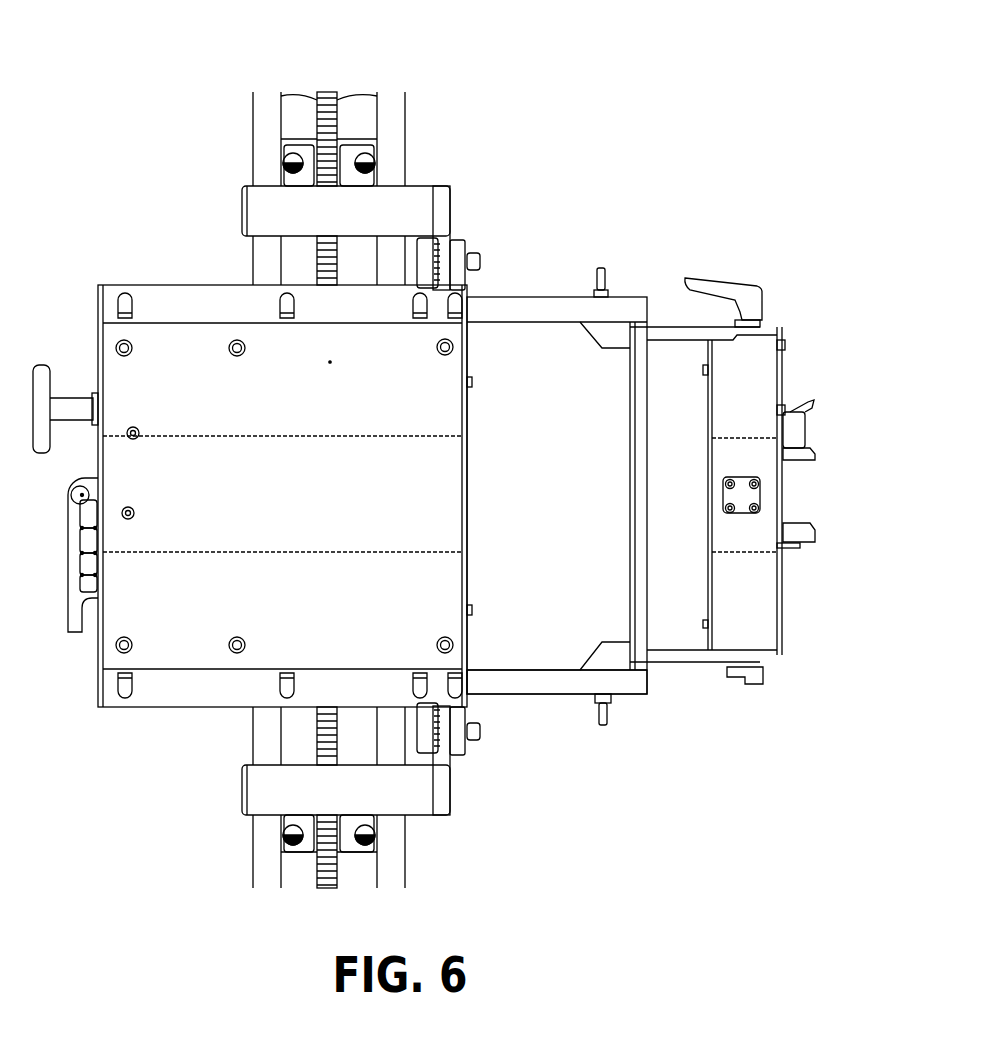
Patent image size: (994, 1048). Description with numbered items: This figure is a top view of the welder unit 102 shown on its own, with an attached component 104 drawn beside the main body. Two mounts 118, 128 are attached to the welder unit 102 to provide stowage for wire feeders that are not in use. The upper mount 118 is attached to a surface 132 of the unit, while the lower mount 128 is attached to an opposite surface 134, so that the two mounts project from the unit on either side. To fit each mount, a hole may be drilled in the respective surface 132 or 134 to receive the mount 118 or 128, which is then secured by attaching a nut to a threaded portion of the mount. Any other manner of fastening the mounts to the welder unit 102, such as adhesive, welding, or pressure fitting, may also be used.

The welder unit 102 is at (860, 53).
The device module 104 is at (768, 397).
The mount 118 is at (601, 268).
The mount 128 is at (605, 725).
The surface 132 is at (543, 295).
The surface 134 is at (515, 694).